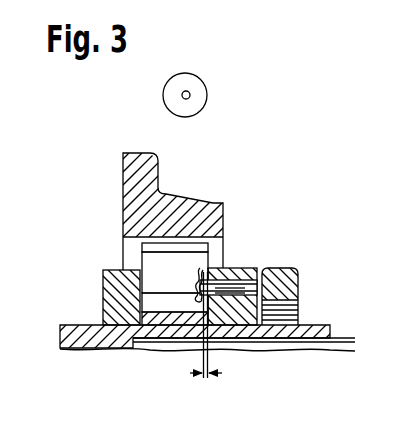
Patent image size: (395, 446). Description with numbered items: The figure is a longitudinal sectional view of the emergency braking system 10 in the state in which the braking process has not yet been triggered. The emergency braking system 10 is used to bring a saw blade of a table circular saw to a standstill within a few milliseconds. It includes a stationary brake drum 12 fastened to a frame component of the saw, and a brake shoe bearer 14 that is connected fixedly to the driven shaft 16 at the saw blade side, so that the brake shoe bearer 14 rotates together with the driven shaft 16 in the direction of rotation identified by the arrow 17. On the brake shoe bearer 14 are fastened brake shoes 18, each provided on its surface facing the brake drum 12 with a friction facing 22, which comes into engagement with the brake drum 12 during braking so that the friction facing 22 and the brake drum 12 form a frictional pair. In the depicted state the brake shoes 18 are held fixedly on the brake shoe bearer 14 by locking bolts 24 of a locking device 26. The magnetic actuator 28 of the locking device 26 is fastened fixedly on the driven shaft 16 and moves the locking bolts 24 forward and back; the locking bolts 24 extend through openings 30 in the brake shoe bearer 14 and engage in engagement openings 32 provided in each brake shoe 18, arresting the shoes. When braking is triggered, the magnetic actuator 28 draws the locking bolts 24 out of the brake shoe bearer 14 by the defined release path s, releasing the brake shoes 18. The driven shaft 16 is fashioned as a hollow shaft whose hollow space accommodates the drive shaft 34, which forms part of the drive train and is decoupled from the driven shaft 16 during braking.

The emergency braking system 10 is at (273, 137).
The brake drum 12 is at (130, 172).
The brake shoe bearer 14 is at (110, 293).
The driven shaft 16 is at (91, 337).
The arrow 17 is at (185, 73).
The brake shoe 18 is at (152, 265).
The friction facing 22 is at (158, 245).
The locking bolt 24 is at (223, 296).
The locking device 26 is at (274, 252).
The magnetic actuator 28 is at (295, 287).
The opening 30 is at (238, 304).
The engagement opening 32 is at (175, 300).
The drive shaft 34 is at (321, 343).
The release path s is at (204, 378).